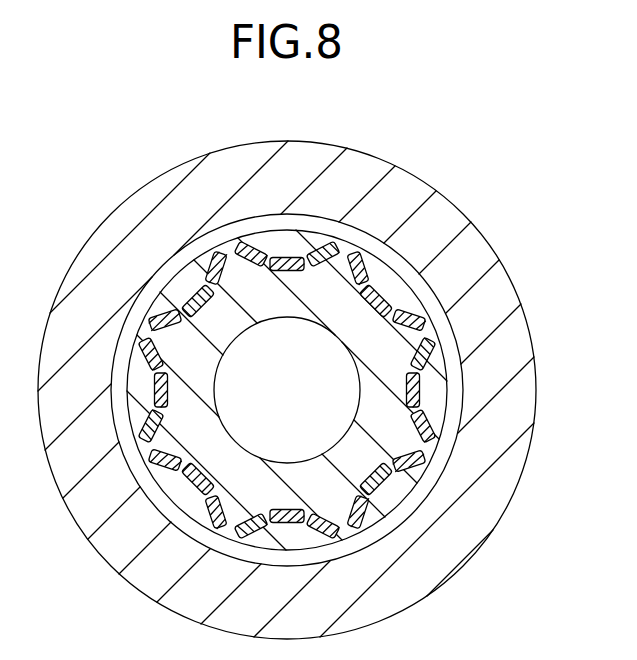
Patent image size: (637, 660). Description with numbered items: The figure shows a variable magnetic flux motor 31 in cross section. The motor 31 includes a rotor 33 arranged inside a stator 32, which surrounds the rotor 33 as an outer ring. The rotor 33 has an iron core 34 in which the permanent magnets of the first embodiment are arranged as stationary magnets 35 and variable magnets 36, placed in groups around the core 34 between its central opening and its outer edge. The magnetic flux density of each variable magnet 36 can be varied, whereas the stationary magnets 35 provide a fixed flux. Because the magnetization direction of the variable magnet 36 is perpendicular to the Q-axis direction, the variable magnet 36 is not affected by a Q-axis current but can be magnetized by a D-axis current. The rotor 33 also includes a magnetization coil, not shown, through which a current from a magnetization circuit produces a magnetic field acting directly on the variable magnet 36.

The variable magnetic flux motor 31 is at (484, 141).
The stator 32 is at (521, 473).
The rotor 33 is at (361, 371).
The iron core 34 is at (403, 305).
The stationary magnets 35 is at (427, 318).
The variable magnets 36 is at (415, 380).